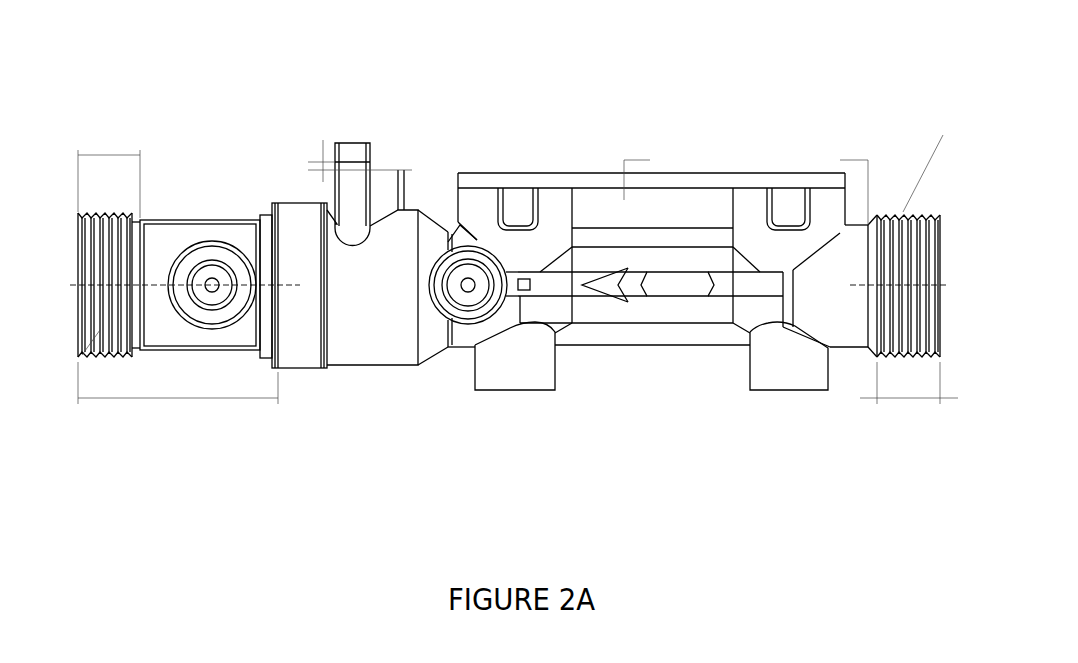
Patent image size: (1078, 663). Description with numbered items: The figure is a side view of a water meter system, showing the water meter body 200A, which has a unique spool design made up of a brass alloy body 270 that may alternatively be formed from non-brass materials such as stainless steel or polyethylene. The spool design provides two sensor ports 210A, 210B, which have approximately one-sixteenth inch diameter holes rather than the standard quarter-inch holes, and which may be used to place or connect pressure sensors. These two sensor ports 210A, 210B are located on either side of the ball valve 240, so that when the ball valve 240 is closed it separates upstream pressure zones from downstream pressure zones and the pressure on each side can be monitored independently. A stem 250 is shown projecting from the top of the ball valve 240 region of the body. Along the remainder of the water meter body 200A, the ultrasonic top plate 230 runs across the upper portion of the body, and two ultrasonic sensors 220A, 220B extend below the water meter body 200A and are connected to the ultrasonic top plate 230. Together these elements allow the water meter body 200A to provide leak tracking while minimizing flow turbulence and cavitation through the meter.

The water meter body 200A is at (498, 262).
The sensor port 210A is at (175, 245).
The sensor port 210B is at (452, 245).
The ultrasonic sensor 220A is at (522, 402).
The ultrasonic sensor 220B is at (793, 402).
The ultrasonic top plate 230 is at (648, 167).
The ball valve 240 is at (348, 300).
The valve stem 250 is at (332, 130).
The brass alloy body 270 is at (218, 215).